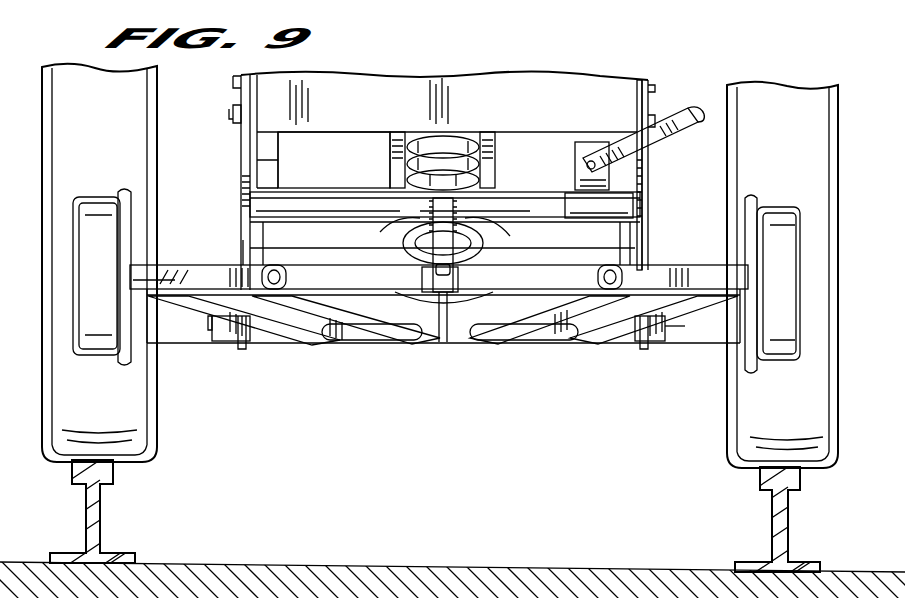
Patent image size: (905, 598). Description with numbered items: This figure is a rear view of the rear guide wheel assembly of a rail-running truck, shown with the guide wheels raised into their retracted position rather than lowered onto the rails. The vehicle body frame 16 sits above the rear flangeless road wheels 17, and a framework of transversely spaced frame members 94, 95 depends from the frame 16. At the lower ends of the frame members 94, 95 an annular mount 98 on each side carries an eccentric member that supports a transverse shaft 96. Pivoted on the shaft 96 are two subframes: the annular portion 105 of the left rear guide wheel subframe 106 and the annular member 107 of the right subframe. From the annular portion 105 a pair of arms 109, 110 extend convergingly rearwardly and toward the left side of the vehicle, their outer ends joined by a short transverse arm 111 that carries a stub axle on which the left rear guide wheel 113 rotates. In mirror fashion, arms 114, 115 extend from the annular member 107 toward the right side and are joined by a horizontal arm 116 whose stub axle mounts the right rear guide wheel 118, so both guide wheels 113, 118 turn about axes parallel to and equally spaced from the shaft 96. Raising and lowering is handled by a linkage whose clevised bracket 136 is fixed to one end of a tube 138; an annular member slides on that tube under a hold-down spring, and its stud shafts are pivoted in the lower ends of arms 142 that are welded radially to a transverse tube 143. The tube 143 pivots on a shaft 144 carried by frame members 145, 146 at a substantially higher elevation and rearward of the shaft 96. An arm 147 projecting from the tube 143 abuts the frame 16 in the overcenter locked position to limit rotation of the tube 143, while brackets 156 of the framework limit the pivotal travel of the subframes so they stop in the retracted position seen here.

The body frame 16 is at (385, 113).
The rear flangeless road wheels 17 is at (135, 450).
The frame member 94 is at (640, 228).
The frame member 95 is at (240, 146).
The transverse shaft 96 is at (665, 332).
The annular mount 98 is at (232, 342).
The annular portion 105 is at (352, 342).
The left rear guide wheel subframe 106 is at (444, 342).
The annular member 107 is at (556, 342).
The arm 109 is at (302, 340).
The arm 110 is at (400, 330).
The short transverse arm 111 is at (439, 277).
The left rear guide wheel 113 is at (90, 352).
The arm 114 is at (496, 342).
The arm 115 is at (608, 342).
The horizontal arm 116 is at (696, 270).
The right rear guide wheel 118 is at (770, 358).
The clevised bracket 136 is at (408, 246).
The tube 138 is at (452, 150).
The arms 142 is at (486, 152).
The transverse tube 143 is at (340, 200).
The shaft 144 is at (606, 220).
The frame member 145 is at (245, 208).
The frame member 146 is at (640, 192).
The arm 147 is at (458, 250).
The brackets 156 is at (255, 245).